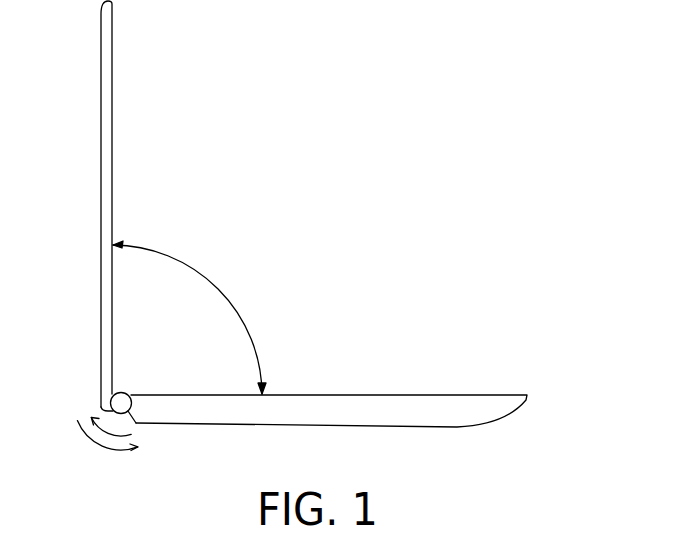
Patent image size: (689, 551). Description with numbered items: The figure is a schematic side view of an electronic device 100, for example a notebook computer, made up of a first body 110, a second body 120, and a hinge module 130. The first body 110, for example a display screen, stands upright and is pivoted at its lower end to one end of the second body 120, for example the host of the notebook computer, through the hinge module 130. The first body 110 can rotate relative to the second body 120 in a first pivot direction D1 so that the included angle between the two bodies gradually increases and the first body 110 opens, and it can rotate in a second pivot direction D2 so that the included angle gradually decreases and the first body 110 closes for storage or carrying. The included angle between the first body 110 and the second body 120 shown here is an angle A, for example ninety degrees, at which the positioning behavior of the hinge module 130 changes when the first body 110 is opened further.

The electronic device 100 is at (334, 239).
The first body 110 is at (110, 59).
The second body 120 is at (431, 426).
The hinge module 130 is at (110, 404).
The angle A is at (189, 317).
The first pivot direction D1 is at (81, 436).
The second pivot direction D2 is at (122, 433).